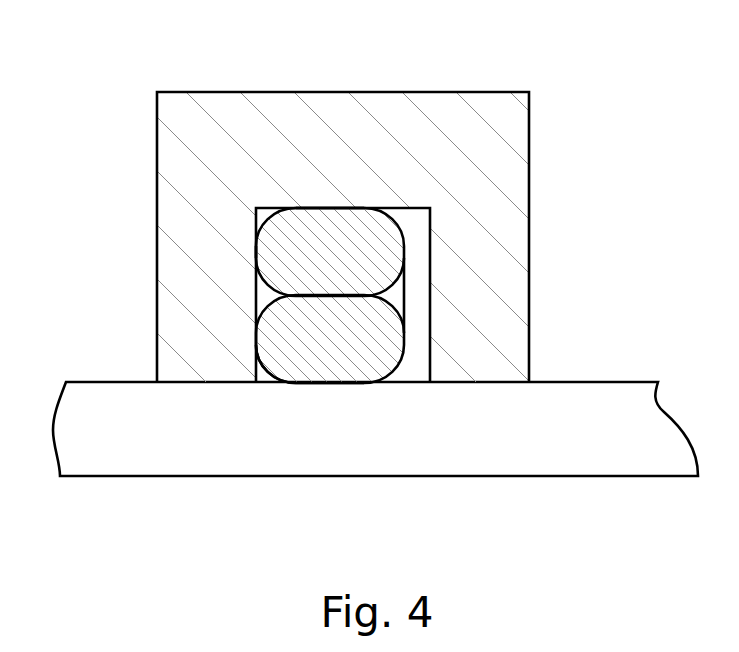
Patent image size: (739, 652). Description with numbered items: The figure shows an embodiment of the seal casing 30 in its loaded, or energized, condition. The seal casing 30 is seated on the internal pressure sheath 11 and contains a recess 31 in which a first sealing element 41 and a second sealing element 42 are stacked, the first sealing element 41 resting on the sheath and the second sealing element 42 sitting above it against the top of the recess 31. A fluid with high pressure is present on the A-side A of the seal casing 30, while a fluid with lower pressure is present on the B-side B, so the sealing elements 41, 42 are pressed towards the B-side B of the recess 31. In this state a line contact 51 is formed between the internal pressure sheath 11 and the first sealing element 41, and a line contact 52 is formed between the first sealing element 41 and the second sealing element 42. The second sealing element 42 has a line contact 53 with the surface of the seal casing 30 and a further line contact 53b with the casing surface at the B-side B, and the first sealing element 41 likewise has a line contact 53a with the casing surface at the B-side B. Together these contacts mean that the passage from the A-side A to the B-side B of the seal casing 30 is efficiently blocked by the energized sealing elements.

The internal pressure sheath 11 is at (549, 476).
The seal casing 30 is at (157, 228).
The recess 31 is at (417, 227).
The first sealing element 41 is at (277, 342).
The second sealing element 42 is at (298, 237).
The line contact 51 is at (312, 382).
The line contact 52 is at (387, 297).
The line contact 53 is at (377, 209).
The line contact 53a is at (258, 352).
The line contact 53b is at (258, 237).
The A-side A is at (550, 373).
The B-side B is at (138, 376).